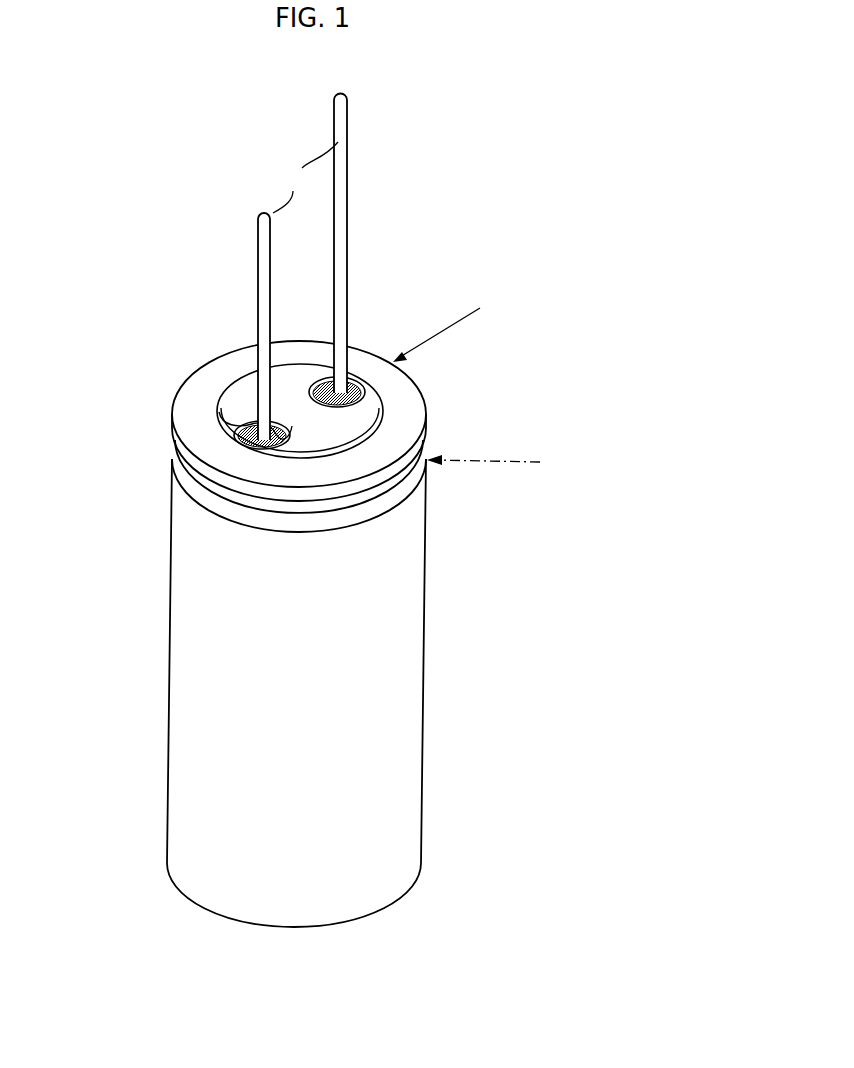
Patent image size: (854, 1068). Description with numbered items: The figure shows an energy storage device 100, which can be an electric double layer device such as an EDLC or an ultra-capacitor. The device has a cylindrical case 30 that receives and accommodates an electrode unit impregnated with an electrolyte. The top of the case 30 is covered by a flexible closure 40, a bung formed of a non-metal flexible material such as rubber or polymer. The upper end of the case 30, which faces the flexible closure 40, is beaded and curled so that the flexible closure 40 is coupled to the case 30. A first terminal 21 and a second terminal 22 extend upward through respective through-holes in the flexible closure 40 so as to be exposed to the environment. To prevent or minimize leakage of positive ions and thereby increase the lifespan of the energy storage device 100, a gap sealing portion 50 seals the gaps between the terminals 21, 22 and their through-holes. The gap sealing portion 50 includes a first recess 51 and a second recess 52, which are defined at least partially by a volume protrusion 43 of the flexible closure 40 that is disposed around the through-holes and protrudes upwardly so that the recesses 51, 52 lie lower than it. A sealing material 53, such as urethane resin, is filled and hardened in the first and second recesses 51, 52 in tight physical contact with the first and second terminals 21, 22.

The energy storage device 100 is at (112, 77).
The first terminal 21 is at (365, 214).
The second terminal 22 is at (247, 272).
The case 30 is at (412, 667).
The flexible closure 40 is at (387, 415).
The volume protrusion 43 is at (245, 388).
The gap sealing portion 50 is at (391, 336).
The first recess 51 is at (368, 392).
The second recess 52 is at (240, 440).
The sealing material 53 is at (358, 372).